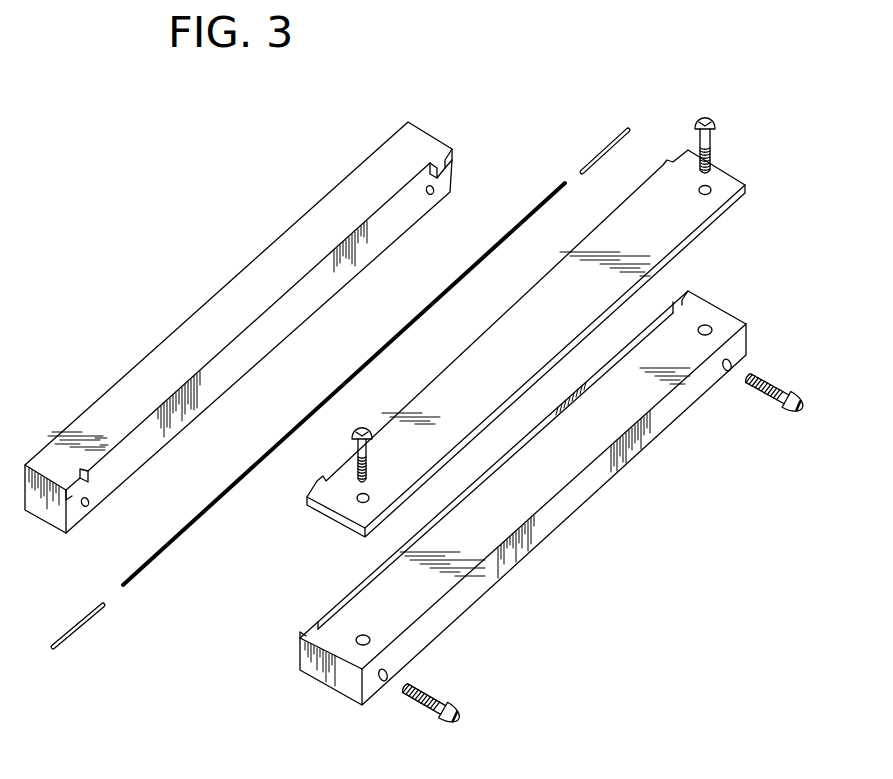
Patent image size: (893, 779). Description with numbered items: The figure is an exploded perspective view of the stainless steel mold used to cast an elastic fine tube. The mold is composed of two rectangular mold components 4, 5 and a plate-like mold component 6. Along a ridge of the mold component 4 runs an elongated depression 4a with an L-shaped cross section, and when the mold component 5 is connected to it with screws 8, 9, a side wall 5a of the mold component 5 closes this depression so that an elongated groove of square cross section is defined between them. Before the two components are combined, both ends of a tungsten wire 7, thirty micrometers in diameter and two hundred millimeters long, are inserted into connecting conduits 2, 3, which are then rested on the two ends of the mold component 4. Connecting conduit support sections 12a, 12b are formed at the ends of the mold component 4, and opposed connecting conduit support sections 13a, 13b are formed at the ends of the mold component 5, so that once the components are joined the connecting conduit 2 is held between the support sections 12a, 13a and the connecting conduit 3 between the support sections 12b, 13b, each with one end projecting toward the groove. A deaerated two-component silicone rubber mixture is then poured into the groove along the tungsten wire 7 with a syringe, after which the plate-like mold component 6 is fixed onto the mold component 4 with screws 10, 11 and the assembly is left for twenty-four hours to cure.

The connecting conduit 2 is at (610, 143).
The connecting conduit 3 is at (87, 625).
The mold component 4 is at (489, 477).
The depression 4a is at (347, 597).
The mold component 5 is at (279, 311).
The side wall 5a is at (270, 343).
The mold component 6 is at (543, 302).
The tungsten wire 7 is at (192, 530).
The screw 8 is at (800, 404).
The screw 9 is at (460, 708).
The screw 10 is at (715, 121).
The screw 11 is at (357, 473).
The connecting conduit support section 12a is at (685, 296).
The connecting conduit support section 12b is at (298, 638).
The connecting conduit support section 13a is at (455, 158).
The connecting conduit support section 13b is at (95, 490).